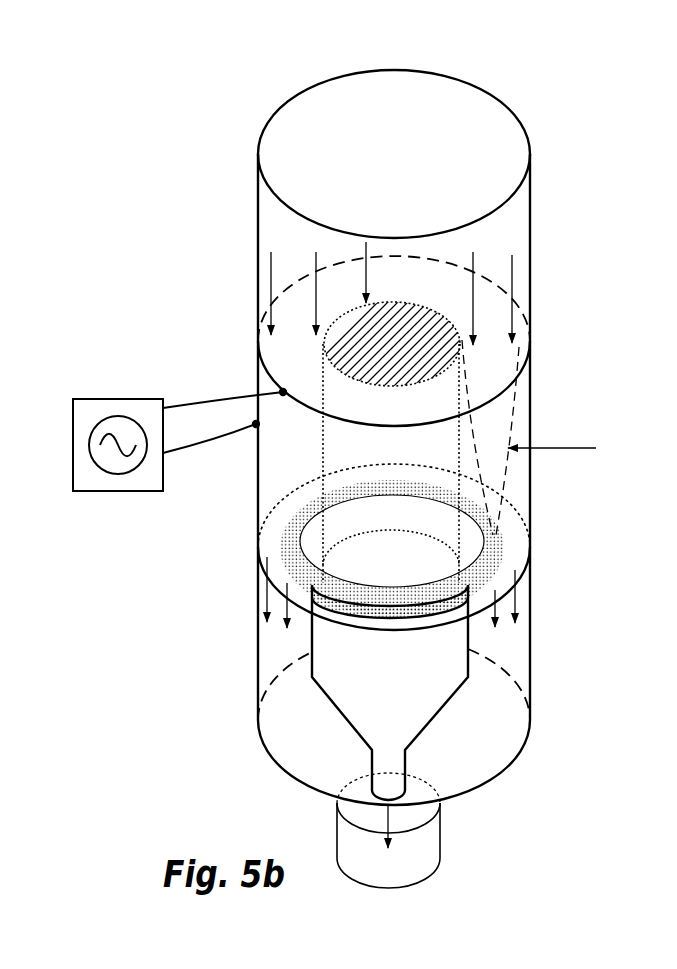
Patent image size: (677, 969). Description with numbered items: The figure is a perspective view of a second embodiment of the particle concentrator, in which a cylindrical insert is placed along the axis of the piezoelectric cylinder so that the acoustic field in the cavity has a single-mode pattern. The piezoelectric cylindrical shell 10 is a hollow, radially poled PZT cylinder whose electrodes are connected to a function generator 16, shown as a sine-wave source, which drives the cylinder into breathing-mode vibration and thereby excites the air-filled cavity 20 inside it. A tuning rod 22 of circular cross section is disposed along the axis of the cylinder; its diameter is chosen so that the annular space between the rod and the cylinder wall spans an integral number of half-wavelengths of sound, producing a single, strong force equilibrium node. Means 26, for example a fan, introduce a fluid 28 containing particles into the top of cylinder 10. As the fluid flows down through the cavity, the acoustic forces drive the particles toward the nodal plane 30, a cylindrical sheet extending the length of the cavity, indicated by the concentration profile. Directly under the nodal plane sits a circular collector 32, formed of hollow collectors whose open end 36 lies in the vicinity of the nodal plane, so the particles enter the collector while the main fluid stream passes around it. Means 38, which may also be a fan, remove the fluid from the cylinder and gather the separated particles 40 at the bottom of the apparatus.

The piezoelectric cylindrical shell 10 is at (531, 369).
The function generator 16 is at (120, 493).
The air-filled cavity 20 is at (285, 352).
The tuning rod 22 is at (318, 446).
The means for introducing a fluid 26 is at (534, 232).
The fluid containing particles 28 is at (454, 298).
The nodal plane 30 is at (482, 612).
The circular collector 32 is at (340, 673).
The open end 36 is at (350, 605).
The means for removing the fluid 38 is at (531, 639).
The separated particles 40 is at (449, 837).